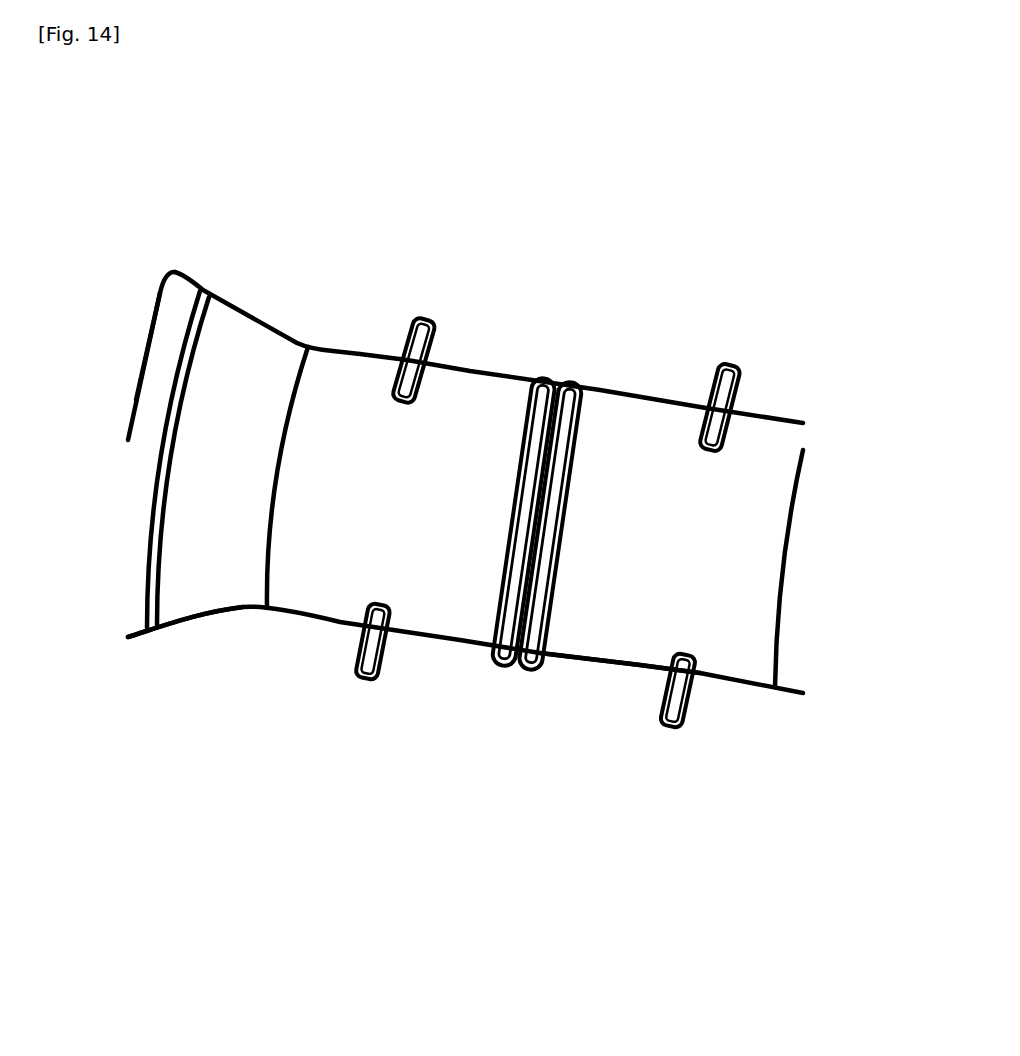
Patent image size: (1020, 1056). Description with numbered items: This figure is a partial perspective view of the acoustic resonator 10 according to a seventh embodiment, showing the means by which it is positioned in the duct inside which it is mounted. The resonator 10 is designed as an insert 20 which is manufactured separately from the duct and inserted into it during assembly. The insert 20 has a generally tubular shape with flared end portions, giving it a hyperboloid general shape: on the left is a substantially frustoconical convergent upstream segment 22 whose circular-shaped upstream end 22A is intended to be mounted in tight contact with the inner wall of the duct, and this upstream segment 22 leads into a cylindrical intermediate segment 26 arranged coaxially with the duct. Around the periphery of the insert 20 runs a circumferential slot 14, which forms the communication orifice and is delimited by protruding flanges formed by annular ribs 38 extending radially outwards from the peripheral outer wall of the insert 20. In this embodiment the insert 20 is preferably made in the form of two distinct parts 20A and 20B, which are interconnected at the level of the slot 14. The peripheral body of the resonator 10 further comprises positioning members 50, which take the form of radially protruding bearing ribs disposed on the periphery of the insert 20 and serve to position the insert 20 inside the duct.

The acoustic resonator 10 is at (243, 319).
The insert 20 is at (333, 422).
The first part of insert member 20A is at (188, 623).
The second part of insert member 20B is at (623, 667).
The upstream segment 22 is at (192, 527).
The upstream end 22A is at (158, 298).
The slot 14 is at (517, 662).
The annular ribs 38 is at (500, 666).
The intermediate segment 26 is at (727, 678).
The positioning members 50 is at (705, 393).